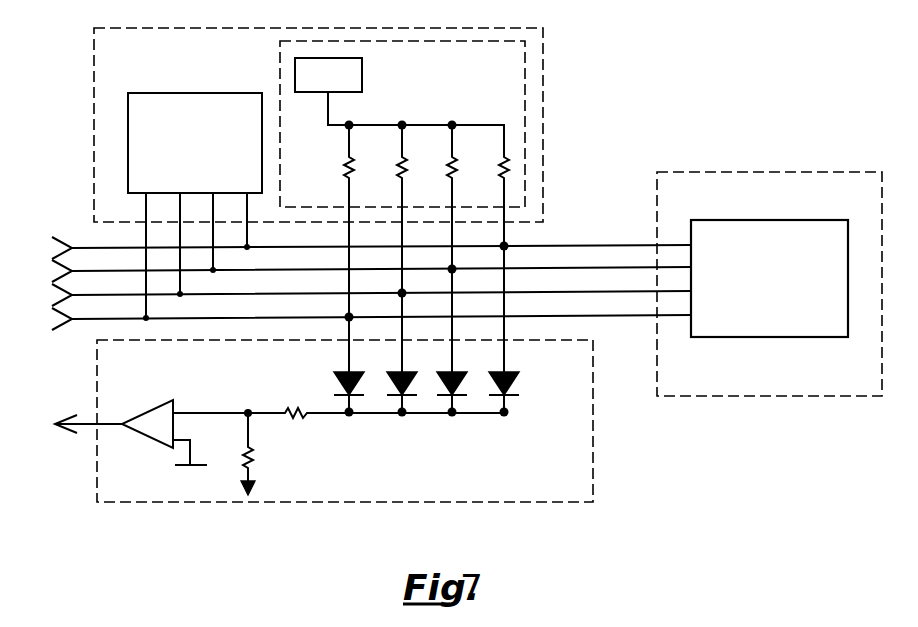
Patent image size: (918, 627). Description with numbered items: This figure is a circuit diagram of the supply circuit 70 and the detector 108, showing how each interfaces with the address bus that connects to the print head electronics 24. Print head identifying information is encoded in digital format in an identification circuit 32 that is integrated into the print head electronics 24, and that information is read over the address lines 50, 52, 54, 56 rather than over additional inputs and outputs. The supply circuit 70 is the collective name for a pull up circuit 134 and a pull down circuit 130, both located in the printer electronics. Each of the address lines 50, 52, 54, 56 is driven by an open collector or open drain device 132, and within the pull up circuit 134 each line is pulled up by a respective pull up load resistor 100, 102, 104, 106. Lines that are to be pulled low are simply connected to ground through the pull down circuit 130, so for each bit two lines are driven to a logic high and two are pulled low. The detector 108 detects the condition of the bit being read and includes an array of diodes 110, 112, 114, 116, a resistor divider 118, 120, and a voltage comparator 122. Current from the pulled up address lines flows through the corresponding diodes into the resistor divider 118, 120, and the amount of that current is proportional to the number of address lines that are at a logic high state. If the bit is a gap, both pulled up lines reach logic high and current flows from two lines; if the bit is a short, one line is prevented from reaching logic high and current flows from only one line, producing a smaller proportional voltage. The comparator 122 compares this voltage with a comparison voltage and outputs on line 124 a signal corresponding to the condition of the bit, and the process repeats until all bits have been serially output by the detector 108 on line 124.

The supply circuit 70 is at (543, 50).
The pull down circuit 130 is at (187, 93).
The pull up circuit 134 is at (278, 83).
The open collector or open drain device 132 is at (363, 84).
The resistor 100 is at (349, 160).
The resistor 102 is at (402, 160).
The resistor 104 is at (452, 160).
The resistor 106 is at (504, 160).
The address line 50 is at (354, 250).
The address line 52 is at (354, 273).
The address line 54 is at (354, 297).
The address line 56 is at (354, 321).
The print head electronics 24 is at (718, 172).
The identification (ID) circuit 32 is at (802, 220).
The detector 108 is at (593, 462).
The diode 110 is at (337, 376).
The diode 112 is at (390, 376).
The diode 114 is at (440, 376).
The diode 116 is at (492, 376).
The resistor divider 118 is at (300, 418).
The resistor divider 120 is at (255, 457).
The voltage comparator 122 is at (168, 400).
The line 124 is at (78, 424).